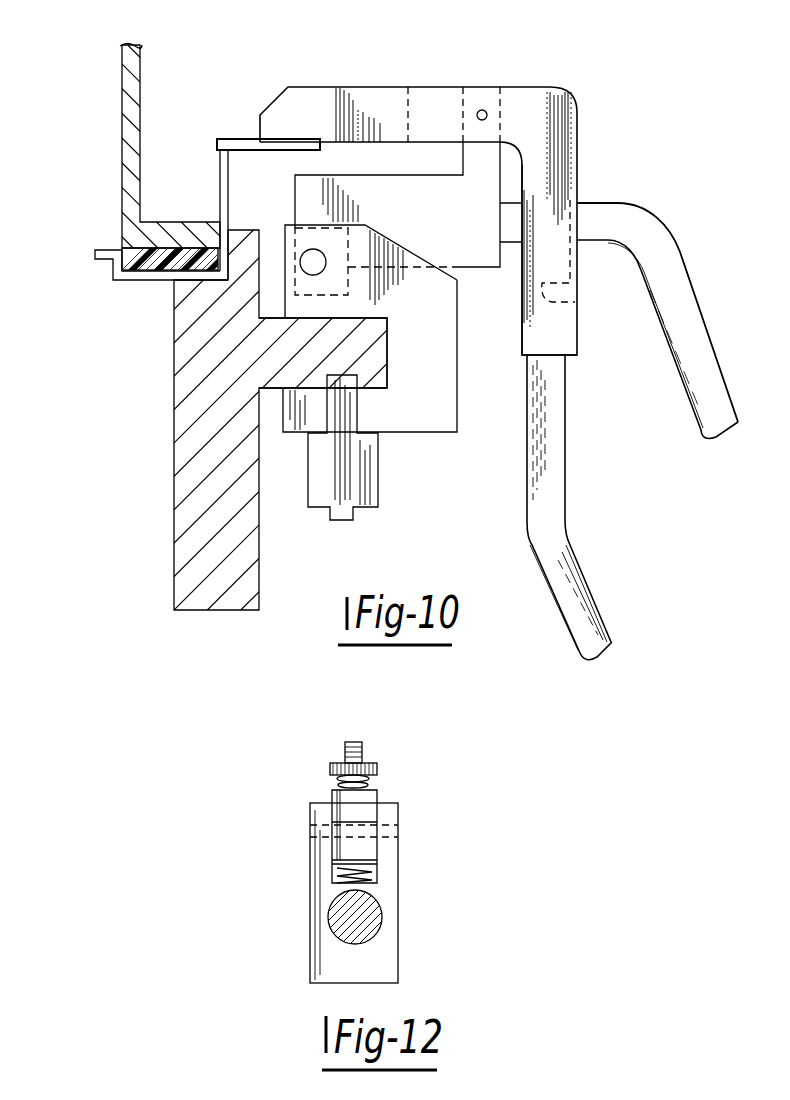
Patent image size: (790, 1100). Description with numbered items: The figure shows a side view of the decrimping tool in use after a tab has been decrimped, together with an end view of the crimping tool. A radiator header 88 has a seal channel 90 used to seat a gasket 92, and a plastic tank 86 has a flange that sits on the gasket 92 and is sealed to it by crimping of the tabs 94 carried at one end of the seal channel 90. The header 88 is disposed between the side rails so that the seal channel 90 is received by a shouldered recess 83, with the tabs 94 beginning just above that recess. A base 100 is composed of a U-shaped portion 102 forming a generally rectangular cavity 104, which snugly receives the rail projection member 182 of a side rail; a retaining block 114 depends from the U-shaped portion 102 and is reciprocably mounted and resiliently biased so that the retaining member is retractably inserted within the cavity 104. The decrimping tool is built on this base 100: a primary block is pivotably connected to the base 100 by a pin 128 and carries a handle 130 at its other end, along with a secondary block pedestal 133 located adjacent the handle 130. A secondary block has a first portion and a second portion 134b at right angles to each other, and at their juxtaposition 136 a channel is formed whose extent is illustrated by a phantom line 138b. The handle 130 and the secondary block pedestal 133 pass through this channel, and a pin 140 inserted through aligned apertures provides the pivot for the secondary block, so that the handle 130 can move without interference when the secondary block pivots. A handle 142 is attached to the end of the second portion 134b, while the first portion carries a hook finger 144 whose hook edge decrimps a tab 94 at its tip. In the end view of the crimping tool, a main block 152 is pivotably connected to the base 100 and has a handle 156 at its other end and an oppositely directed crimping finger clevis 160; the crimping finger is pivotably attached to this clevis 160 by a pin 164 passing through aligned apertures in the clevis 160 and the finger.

In FIG. 10, the shouldered recess 83 is at (186, 292).
In FIG. 10, the plastic tank 86 is at (122, 48).
In FIG. 10, the radiator header 88 is at (108, 267).
In FIG. 10, the seal channel 90 is at (152, 265).
In FIG. 10, the gasket 92 is at (170, 262).
In FIG. 10, the tabs 94 is at (231, 193).
In FIG. 10, the base 100 is at (399, 372).
In FIG. 10, the U-shaped portion 102 is at (454, 388).
In FIG. 10, the cavity 104 is at (358, 316).
In FIG. 10, the retaining block 114 is at (380, 487).
In FIG. 10, the pin 128 is at (317, 270).
In FIG. 10, the handle 130 is at (732, 240).
In FIG. 10, the secondary block pedestal 133 is at (463, 160).
In FIG. 10, the second portion 134b is at (578, 163).
In FIG. 10, the juxtaposition 136 is at (576, 93).
In FIG. 10, the phantom line 138b is at (575, 306).
In FIG. 10, the pin 140 is at (485, 110).
In FIG. 10, the handle 142 is at (630, 516).
In FIG. 10, the hook finger 144 is at (236, 136).
In FIG. 10, the rail projection member 182 is at (388, 363).
In FIG. 12, the main block 152 is at (310, 915).
In FIG. 12, the handle 156 is at (382, 918).
In FIG. 12, the crimping finger clevis 160 is at (318, 800).
In FIG. 12, the pin 164 is at (398, 830).